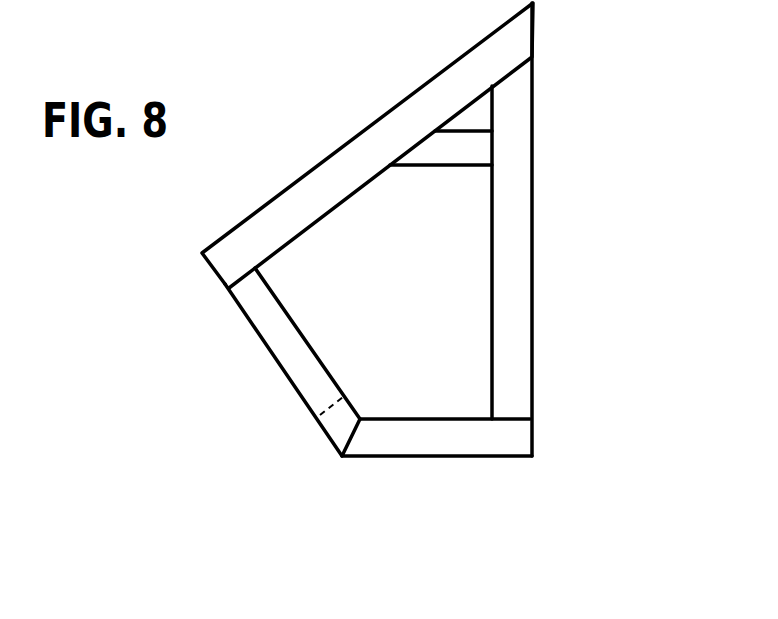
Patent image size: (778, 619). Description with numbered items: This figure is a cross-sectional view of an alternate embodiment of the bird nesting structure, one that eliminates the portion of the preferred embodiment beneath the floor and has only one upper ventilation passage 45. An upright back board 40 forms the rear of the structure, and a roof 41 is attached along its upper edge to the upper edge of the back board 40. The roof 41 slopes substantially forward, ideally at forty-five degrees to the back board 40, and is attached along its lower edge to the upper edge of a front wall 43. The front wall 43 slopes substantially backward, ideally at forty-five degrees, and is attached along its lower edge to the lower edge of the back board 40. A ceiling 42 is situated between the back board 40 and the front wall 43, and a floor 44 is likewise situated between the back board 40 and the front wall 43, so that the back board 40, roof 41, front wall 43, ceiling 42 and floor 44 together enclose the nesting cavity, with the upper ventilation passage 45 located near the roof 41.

The back board 40 is at (512, 275).
The roof 41 is at (365, 152).
The ceiling 42 is at (457, 147).
The front wall 43 is at (208, 287).
The floor 44 is at (452, 442).
The upper ventilation passage 45 is at (470, 113).